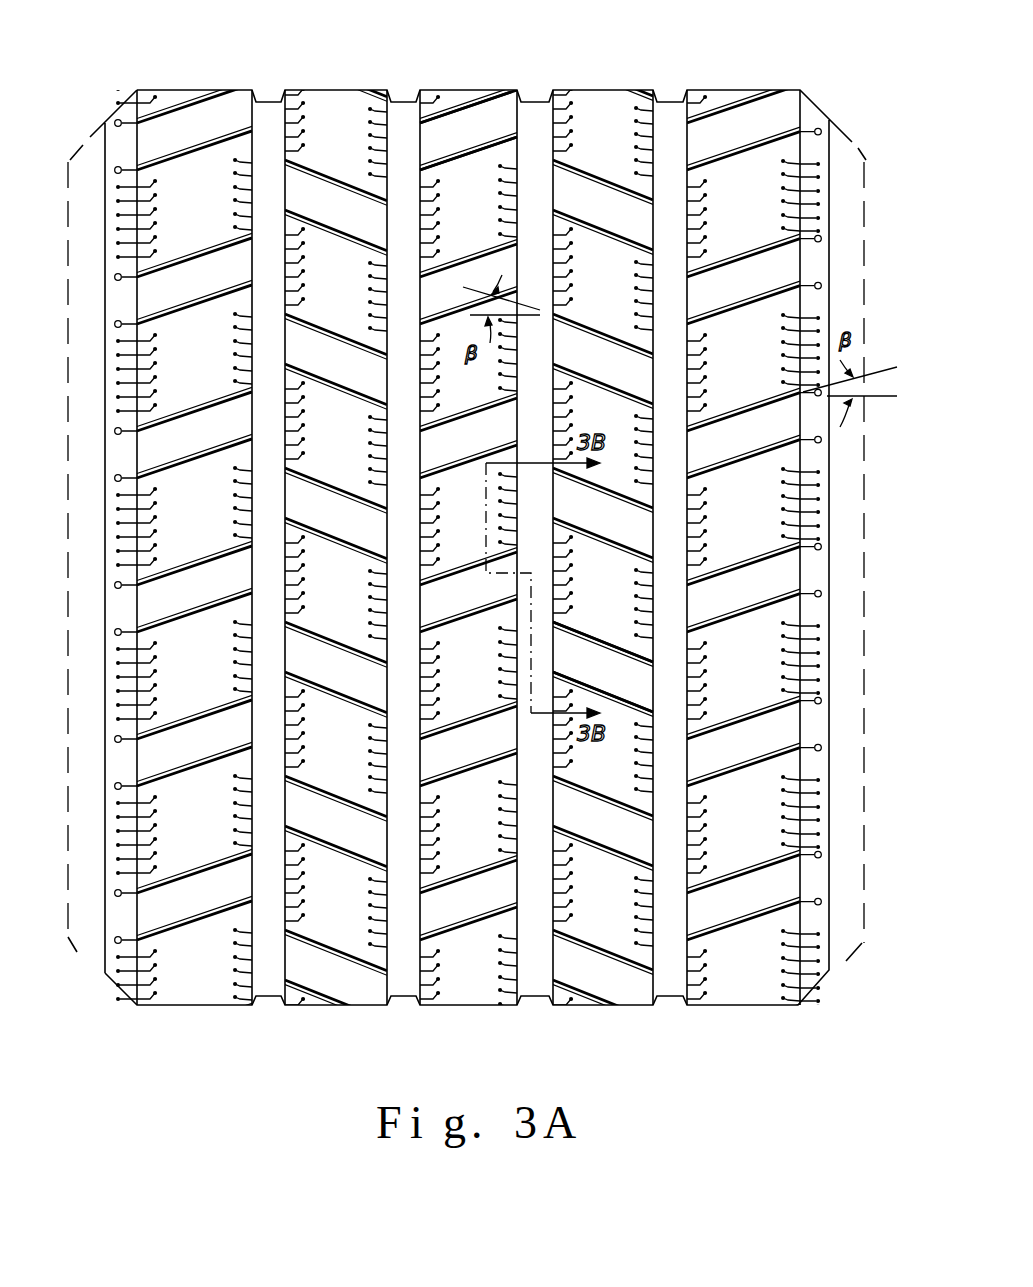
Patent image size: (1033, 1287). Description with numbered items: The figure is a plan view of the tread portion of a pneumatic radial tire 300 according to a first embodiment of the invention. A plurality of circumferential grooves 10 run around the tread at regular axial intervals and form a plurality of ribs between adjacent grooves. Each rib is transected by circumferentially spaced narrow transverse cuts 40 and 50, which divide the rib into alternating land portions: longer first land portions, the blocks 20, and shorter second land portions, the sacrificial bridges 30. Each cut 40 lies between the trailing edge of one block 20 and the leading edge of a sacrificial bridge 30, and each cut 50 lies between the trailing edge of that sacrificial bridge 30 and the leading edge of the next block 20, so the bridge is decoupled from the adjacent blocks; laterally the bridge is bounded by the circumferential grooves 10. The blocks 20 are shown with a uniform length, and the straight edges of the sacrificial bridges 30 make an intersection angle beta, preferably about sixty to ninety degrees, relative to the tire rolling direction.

The circumferential groove 10 is at (528, 132).
The block 20 is at (587, 195).
The sacrificial bridge 30 is at (603, 162).
The cut 40 is at (600, 640).
The cut 50 is at (617, 697).
The tire 300 is at (98, 1013).